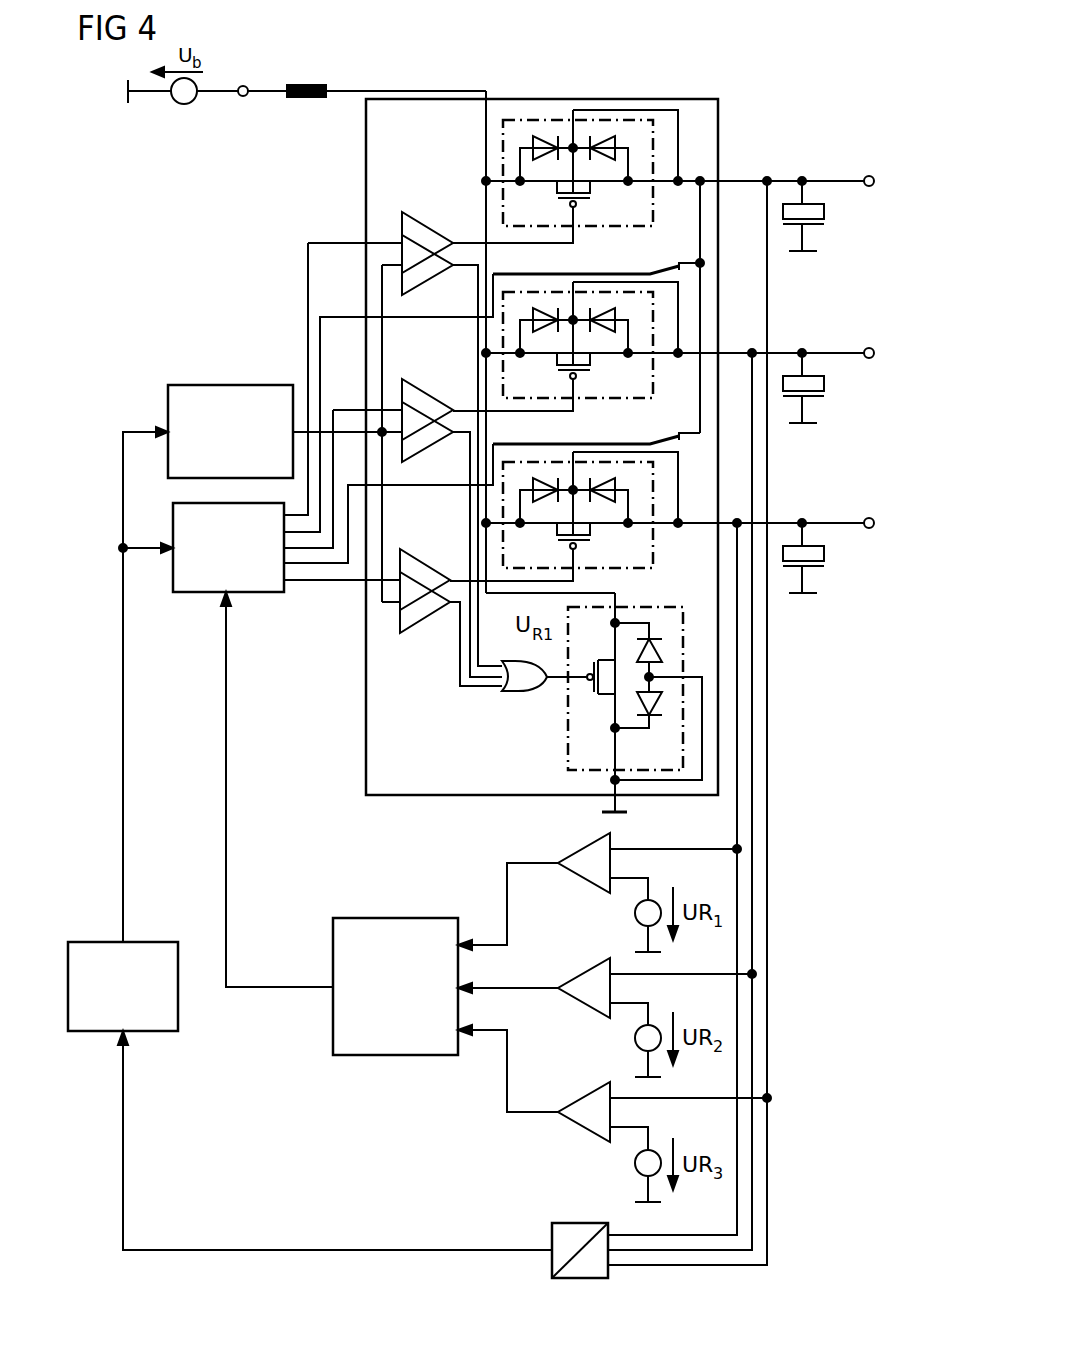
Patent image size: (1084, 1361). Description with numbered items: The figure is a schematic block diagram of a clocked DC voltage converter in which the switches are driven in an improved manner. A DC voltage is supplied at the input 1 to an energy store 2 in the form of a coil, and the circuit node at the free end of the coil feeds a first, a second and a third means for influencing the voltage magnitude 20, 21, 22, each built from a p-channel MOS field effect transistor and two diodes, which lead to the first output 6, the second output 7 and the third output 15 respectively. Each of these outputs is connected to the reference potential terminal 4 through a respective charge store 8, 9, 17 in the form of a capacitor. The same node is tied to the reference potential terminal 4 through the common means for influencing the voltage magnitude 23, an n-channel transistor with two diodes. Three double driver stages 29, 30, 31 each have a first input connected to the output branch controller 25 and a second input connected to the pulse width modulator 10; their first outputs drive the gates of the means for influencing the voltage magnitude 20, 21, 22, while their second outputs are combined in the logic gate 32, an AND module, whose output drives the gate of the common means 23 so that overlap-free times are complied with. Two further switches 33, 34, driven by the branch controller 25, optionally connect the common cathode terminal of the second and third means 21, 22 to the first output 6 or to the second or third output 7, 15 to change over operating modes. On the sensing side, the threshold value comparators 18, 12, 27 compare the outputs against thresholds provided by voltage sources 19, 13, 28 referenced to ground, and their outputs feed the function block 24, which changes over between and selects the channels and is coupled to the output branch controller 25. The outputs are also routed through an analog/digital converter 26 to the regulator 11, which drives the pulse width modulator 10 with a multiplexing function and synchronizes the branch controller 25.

The input 1 is at (243, 97).
The energy store 2 is at (305, 98).
The reference potential terminal 4 is at (623, 813).
The first output 6 is at (870, 187).
The second output 7 is at (870, 359).
The charge store 8 is at (811, 226).
The charge store 9 is at (811, 398).
The pulse width modulator 10 is at (232, 385).
The regulator 11 is at (95, 942).
The threshold value comparator 12 is at (582, 964).
The voltage source 13 is at (635, 1038).
The third output 15 is at (870, 529).
The further charge store 17 is at (811, 568).
The further threshold value comparator 18 is at (582, 842).
The voltage source 19 is at (635, 913).
The first means for influencing the voltage magnitude 20 is at (503, 138).
The second means for influencing the voltage magnitude 21 is at (604, 292).
The third means for influencing the voltage magnitude 22 is at (604, 462).
The common means for influencing the voltage magnitude 23 is at (663, 603).
The function block 24 is at (397, 918).
The output branch controller 25 is at (195, 596).
The analog/digital converter 26 is at (580, 1222).
The threshold value comparator 27 is at (582, 1089).
The voltage source 28 is at (635, 1163).
The driver stage 29 is at (430, 228).
The driver stage 30 is at (428, 395).
The driver stage 31 is at (428, 565).
The logic gate 32 is at (510, 697).
The switch 33 is at (670, 268).
The switch 34 is at (670, 438).